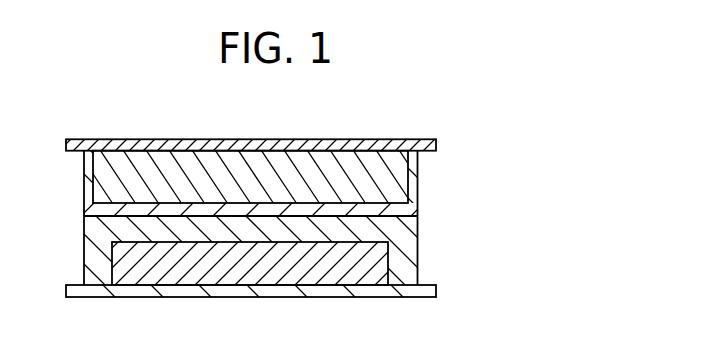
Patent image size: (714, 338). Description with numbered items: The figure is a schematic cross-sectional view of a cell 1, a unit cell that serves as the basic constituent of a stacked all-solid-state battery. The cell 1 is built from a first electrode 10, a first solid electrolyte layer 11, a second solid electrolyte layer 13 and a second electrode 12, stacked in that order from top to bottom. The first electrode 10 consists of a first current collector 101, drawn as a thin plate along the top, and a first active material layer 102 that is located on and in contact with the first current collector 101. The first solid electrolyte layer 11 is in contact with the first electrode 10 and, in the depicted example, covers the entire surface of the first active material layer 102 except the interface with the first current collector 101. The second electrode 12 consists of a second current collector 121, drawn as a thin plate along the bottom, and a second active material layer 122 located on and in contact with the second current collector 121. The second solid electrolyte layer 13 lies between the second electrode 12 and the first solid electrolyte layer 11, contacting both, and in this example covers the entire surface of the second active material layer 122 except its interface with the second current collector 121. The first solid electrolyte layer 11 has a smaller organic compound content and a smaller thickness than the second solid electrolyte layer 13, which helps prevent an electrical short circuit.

The cell 1 is at (58, 140).
The first electrode 10 is at (562, 108).
The first current collector 101 is at (430, 146).
The first active material layer 102 is at (393, 172).
The first solid electrolyte layer 11 is at (388, 204).
The second solid electrolyte layer 13 is at (397, 233).
The second electrode 12 is at (560, 268).
The second active material layer 122 is at (373, 269).
The second current collector 121 is at (432, 291).